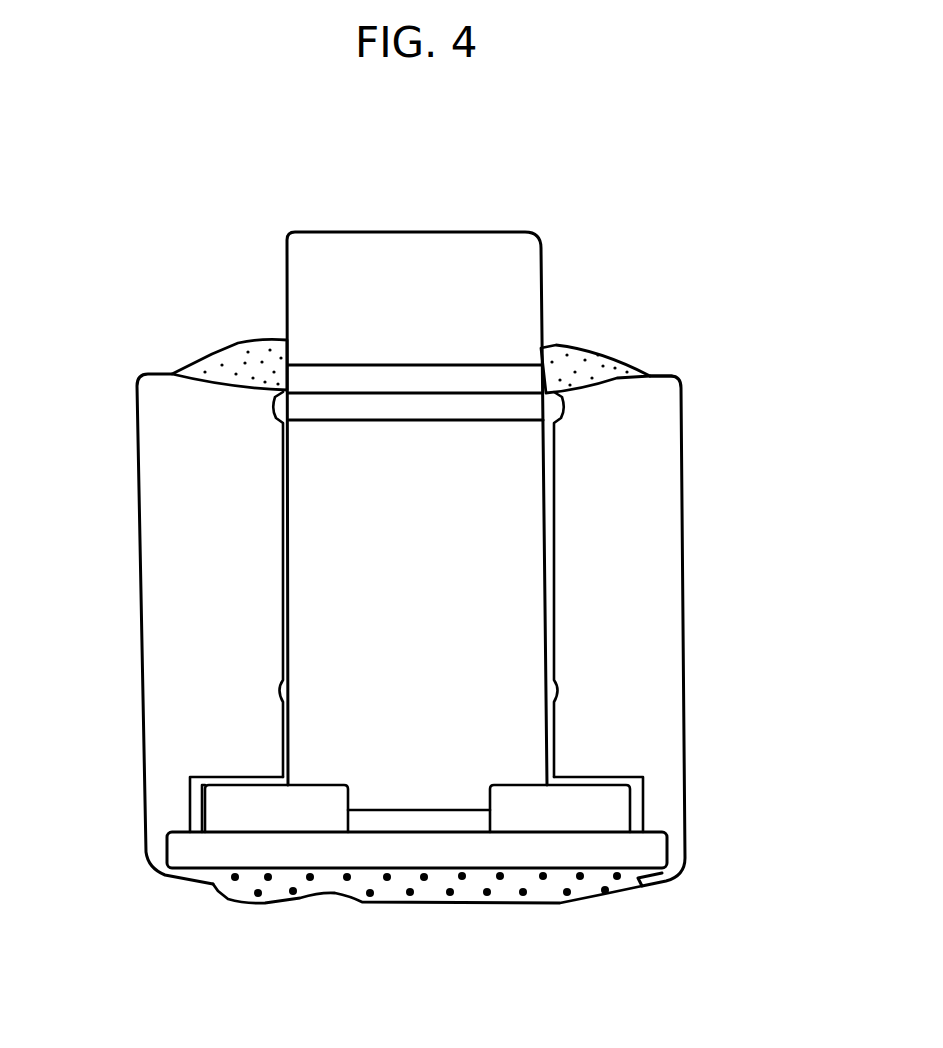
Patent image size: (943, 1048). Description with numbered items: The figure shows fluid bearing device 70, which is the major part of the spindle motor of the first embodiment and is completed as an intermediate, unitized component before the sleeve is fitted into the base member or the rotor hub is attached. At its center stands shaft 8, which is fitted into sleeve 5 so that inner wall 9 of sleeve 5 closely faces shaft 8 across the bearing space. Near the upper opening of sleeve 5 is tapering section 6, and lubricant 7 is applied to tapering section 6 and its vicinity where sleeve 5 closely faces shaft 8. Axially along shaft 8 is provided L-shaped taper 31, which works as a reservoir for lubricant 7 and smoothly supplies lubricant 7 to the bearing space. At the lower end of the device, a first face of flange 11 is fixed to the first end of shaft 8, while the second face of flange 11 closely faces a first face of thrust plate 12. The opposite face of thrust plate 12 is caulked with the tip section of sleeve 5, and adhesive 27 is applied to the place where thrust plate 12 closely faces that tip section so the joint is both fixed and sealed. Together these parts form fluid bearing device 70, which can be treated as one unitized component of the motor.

The fluid bearing device 70 is at (428, 169).
The sleeve 5 is at (640, 508).
The tapering section 6 is at (627, 367).
The lubricant 7 is at (573, 362).
The shaft 8 is at (522, 283).
The inner wall 9 is at (555, 650).
The L-shaped taper 31 is at (352, 380).
The flange 11 is at (517, 800).
The thrust plate 12 is at (283, 855).
The adhesive 27 is at (477, 882).